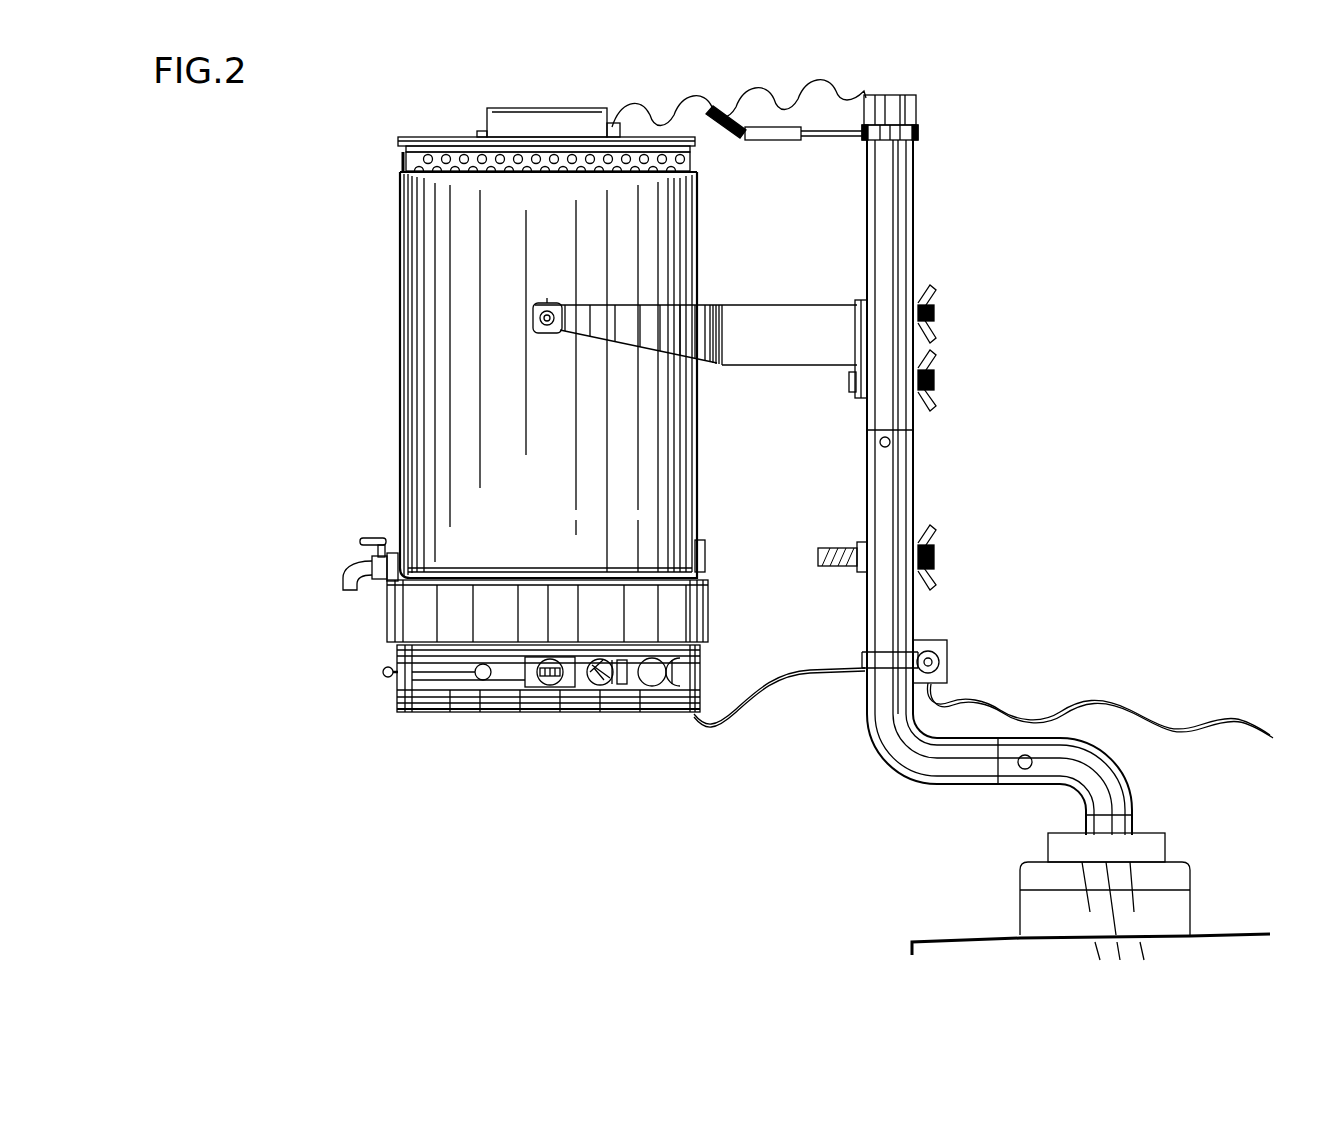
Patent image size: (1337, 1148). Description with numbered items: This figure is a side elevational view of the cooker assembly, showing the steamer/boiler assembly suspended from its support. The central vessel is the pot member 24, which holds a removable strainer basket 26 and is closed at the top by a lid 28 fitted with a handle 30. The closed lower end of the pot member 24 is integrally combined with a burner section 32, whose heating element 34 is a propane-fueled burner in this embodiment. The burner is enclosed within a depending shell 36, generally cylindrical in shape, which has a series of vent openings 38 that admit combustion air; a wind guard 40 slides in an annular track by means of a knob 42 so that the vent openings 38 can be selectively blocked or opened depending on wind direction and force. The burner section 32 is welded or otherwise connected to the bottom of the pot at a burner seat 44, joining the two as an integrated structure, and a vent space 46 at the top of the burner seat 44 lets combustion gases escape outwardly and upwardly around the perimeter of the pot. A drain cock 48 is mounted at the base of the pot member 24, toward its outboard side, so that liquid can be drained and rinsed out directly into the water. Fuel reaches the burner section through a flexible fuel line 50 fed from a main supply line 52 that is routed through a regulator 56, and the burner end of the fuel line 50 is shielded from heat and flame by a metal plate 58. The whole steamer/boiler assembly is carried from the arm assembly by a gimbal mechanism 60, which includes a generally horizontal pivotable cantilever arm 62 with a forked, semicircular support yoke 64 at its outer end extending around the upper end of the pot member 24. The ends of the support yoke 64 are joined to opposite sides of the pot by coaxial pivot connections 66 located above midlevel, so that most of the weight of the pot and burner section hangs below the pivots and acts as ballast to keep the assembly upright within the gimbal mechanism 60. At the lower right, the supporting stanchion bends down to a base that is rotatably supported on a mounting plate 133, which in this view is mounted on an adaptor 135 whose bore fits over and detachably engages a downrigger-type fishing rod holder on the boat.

The pot member 24 is at (495, 470).
The strainer basket 26 is at (405, 165).
The lid 28 is at (430, 137).
The handle 30 is at (505, 107).
The burner section 32 is at (592, 652).
The heating element 34 is at (547, 686).
The depending shell 36 is at (422, 710).
The vent openings 38 is at (655, 690).
The wind guard 40 is at (400, 700).
The knob 42 is at (382, 672).
The burner seat 44 is at (385, 613).
The vent space 46 is at (704, 582).
The drain cock 48 is at (367, 540).
The flexible fuel line 50 is at (752, 718).
The main supply line 52 is at (1118, 700).
The regulator 56 is at (947, 660).
The metal plate 58 is at (620, 688).
The gimbal mechanism 60 is at (678, 329).
The cantilever arm 62 is at (780, 350).
The support yoke 64 is at (595, 305).
The pivot connections 66 is at (541, 326).
The mounting plate 133 is at (1030, 873).
The adaptor 135 is at (1195, 905).